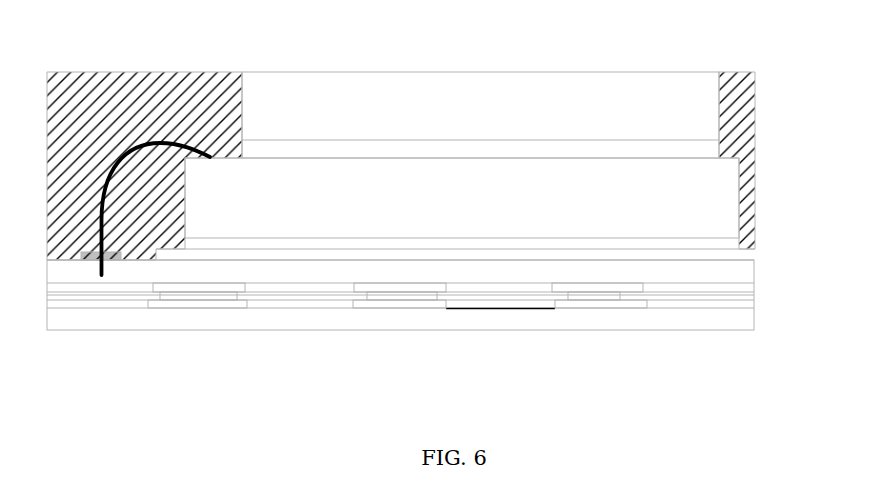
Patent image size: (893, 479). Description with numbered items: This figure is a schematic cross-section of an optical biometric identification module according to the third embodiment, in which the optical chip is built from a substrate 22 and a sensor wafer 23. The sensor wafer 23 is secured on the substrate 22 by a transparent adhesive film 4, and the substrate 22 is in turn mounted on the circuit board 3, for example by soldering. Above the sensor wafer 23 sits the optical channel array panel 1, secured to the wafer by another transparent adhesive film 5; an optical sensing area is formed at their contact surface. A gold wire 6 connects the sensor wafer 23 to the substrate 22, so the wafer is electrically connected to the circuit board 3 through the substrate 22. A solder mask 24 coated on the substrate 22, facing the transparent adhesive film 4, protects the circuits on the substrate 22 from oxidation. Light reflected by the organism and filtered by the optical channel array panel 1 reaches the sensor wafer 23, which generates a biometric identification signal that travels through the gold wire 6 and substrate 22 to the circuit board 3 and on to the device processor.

The optical channel array panel 1 is at (628, 97).
The transparent adhesive film 4 is at (533, 150).
The gold wire 6 is at (102, 275).
The transparent adhesive film 5 is at (307, 243).
The substrate 22 is at (215, 268).
The sensor wafer 23 is at (417, 215).
The solder mask 24 is at (566, 256).
The circuit board 3 is at (700, 326).